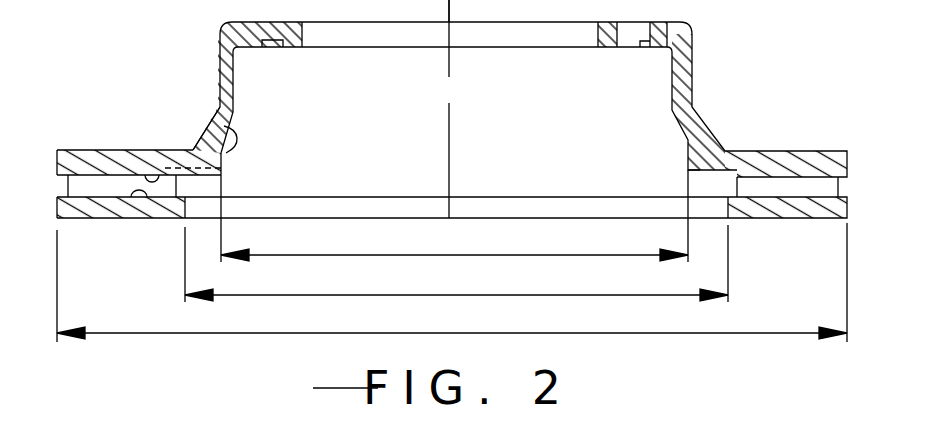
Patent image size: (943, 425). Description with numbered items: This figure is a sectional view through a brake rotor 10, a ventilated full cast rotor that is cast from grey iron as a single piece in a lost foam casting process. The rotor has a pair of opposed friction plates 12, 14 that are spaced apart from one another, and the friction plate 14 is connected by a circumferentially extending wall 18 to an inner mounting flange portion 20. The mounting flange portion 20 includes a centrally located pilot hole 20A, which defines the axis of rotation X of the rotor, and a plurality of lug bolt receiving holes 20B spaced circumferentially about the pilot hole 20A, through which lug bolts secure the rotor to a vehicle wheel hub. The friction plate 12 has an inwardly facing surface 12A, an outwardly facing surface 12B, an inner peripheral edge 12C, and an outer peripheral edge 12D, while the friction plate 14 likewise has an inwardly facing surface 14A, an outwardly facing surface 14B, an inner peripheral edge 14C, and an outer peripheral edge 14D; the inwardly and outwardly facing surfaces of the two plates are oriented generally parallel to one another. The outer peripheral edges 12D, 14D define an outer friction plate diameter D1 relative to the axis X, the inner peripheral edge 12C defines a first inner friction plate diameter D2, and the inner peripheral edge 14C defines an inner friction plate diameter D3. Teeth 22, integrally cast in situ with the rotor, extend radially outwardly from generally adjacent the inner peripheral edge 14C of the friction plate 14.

The brake rotor 10 is at (763, 70).
The friction plate 12 is at (800, 212).
The inwardly facing surface 12A is at (153, 224).
The outwardly facing surface 12B is at (83, 221).
The inner peripheral edge 12C is at (187, 209).
The outer peripheral edge 12D is at (57, 207).
The friction plate 14 is at (800, 157).
The inwardly facing surface 14A is at (161, 150).
The outwardly facing surface 14B is at (123, 148).
The inner peripheral edge 14C is at (220, 108).
The outer peripheral edge 14D is at (57, 160).
The circumferentially extending wall 18 is at (682, 117).
The inner mounting flange portion 20 is at (607, 28).
The pilot hole 20A is at (598, 30).
The lug bolt receiving holes 20B is at (642, 45).
The teeth 22 is at (237, 166).
The axis of rotation X is at (450, 8).
The outer friction plate diameter D1 is at (367, 333).
The first inner friction plate diameter D2 is at (457, 295).
The first inner friction plate diameter D3 is at (362, 255).